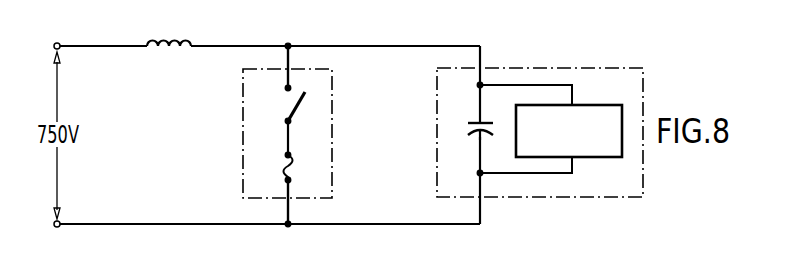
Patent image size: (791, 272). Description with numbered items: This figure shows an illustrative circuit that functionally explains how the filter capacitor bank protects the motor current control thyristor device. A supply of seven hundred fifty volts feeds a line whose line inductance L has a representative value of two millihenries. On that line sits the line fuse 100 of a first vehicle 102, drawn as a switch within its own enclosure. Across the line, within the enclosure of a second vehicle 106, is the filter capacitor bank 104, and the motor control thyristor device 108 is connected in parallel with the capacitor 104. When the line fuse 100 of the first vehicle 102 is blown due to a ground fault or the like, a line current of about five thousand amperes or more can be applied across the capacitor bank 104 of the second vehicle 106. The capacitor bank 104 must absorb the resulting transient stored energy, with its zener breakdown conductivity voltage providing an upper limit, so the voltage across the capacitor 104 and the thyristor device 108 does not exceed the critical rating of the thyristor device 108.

The line inductance L is at (164, 51).
The line fuse 100 is at (292, 169).
The first vehicle 102 is at (243, 70).
The filter capacitor bank 104 is at (468, 124).
The second vehicle 106 is at (437, 70).
The motor control thyristor device 108 is at (592, 100).